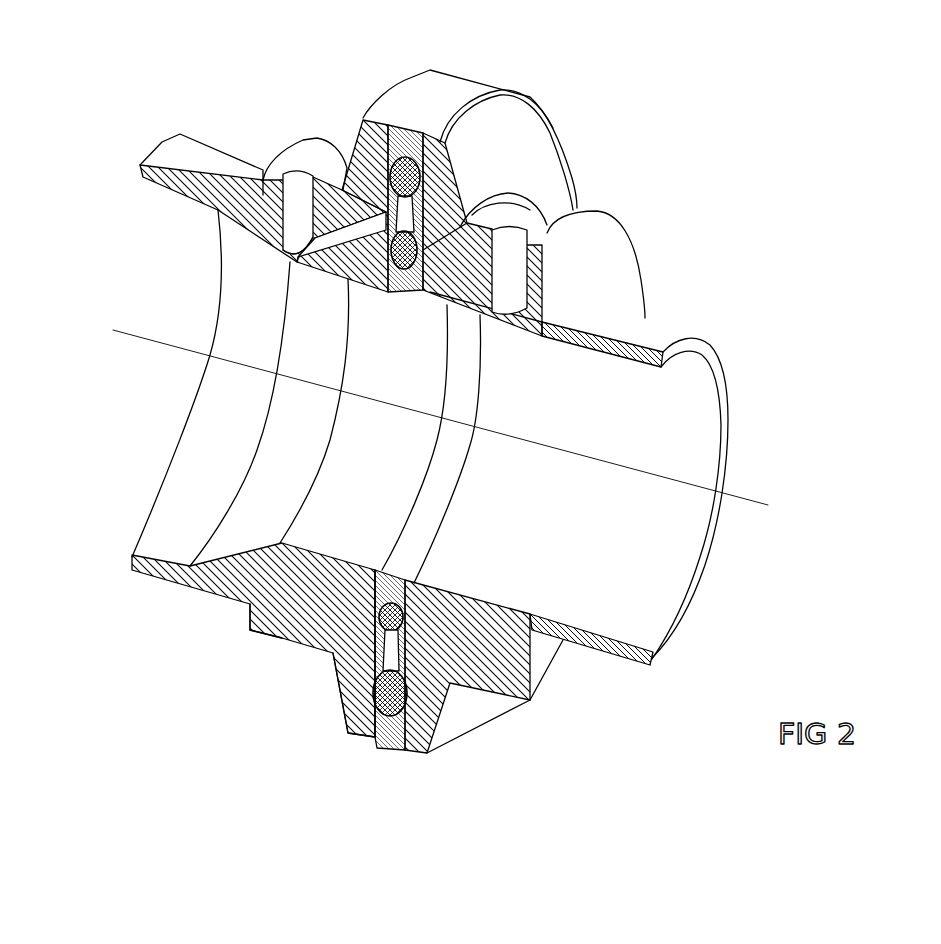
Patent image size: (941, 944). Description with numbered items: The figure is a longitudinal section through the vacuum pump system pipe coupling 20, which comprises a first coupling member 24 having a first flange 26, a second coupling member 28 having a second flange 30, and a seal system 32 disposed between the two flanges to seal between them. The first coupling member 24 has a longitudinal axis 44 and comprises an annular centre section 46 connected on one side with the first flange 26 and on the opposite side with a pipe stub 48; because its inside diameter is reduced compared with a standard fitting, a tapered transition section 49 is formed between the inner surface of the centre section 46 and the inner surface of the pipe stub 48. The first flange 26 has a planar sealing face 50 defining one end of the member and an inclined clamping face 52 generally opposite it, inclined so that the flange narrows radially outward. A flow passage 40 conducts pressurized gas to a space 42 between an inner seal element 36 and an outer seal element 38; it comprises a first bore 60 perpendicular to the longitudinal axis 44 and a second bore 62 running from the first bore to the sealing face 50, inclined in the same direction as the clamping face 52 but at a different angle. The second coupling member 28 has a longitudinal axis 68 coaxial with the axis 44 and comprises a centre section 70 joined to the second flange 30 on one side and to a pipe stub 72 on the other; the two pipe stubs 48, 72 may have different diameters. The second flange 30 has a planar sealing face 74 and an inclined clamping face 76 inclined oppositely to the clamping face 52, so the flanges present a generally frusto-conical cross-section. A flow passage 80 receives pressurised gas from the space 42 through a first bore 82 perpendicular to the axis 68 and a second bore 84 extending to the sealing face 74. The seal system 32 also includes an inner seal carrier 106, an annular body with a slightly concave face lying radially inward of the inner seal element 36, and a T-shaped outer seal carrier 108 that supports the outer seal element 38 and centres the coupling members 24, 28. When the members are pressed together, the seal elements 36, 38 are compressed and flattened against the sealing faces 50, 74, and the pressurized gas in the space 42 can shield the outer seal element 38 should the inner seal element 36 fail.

The vacuum pump system pipe coupling 20 is at (805, 423).
The first coupling member 24 is at (189, 664).
The first flange 26 is at (317, 143).
The second coupling member 28 is at (683, 218).
The second flange 30 is at (574, 170).
The seal system 32 is at (377, 729).
The inner seal element 36 is at (448, 684).
The outer seal element 38 is at (390, 707).
The flow passage 40 is at (281, 214).
The space 42 is at (380, 650).
The longitudinal axis 44 is at (150, 345).
The annular centre section 46 is at (280, 640).
The pipe stub 48 is at (143, 573).
The tapered transition section 49 is at (262, 508).
The planar sealing face 50 is at (348, 729).
The inclined clamping face 52 is at (360, 137).
The first bore 60 is at (290, 220).
The second bore 62 is at (342, 240).
The longitudinal axis 68 is at (765, 507).
The centre section 70 is at (513, 704).
The pipe stub 72 is at (630, 660).
The planar sealing face 74 is at (427, 755).
The inclined clamping face 76 is at (508, 133).
The flow passage 80 is at (527, 268).
The first bore 82 is at (517, 280).
The second bore 84 is at (462, 267).
The inner seal carrier 106 is at (440, 485).
The outer seal carrier 108 is at (438, 83).